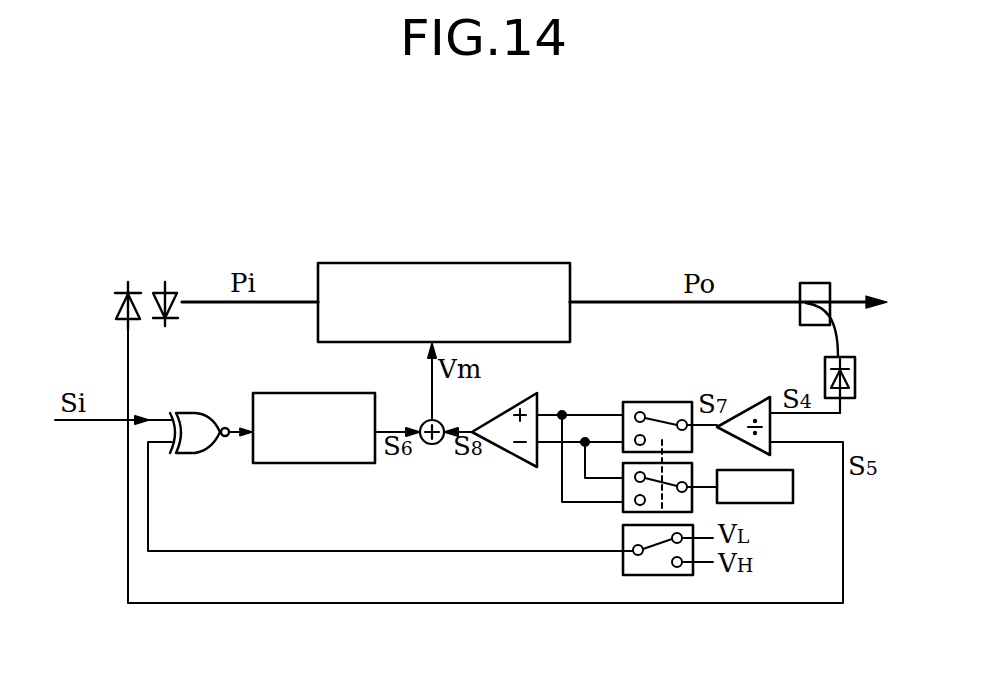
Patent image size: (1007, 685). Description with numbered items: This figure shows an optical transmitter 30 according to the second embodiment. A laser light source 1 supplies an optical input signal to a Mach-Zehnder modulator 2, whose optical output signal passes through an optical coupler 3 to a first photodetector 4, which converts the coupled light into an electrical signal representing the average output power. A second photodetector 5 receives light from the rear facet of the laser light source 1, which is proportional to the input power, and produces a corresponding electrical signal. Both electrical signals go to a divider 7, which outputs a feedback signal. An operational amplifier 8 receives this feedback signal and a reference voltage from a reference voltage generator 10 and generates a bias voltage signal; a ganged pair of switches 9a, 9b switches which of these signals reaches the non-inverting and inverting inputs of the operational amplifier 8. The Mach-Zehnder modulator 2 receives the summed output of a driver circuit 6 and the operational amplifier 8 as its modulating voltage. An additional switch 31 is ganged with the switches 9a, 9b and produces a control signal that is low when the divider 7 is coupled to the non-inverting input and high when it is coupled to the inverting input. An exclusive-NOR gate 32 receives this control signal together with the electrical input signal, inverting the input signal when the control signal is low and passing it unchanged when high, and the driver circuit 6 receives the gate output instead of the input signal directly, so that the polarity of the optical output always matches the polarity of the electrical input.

The laser light source 1 is at (168, 290).
The Mach-Zehnder modulator 2 is at (445, 263).
The optical coupler 3 is at (816, 283).
The first photodetector 4 is at (855, 378).
The second photodetector 5 is at (118, 308).
The driver circuit 6 is at (306, 463).
The divider 7 is at (748, 405).
The operational amplifier 8 is at (498, 450).
The switch 9a is at (645, 402).
The switch 9b is at (620, 508).
The reference voltage generator 10 is at (778, 503).
The optical transmitter 30 is at (630, 210).
The switch 31 is at (622, 567).
The exclusive-NOR gate 32 is at (192, 453).